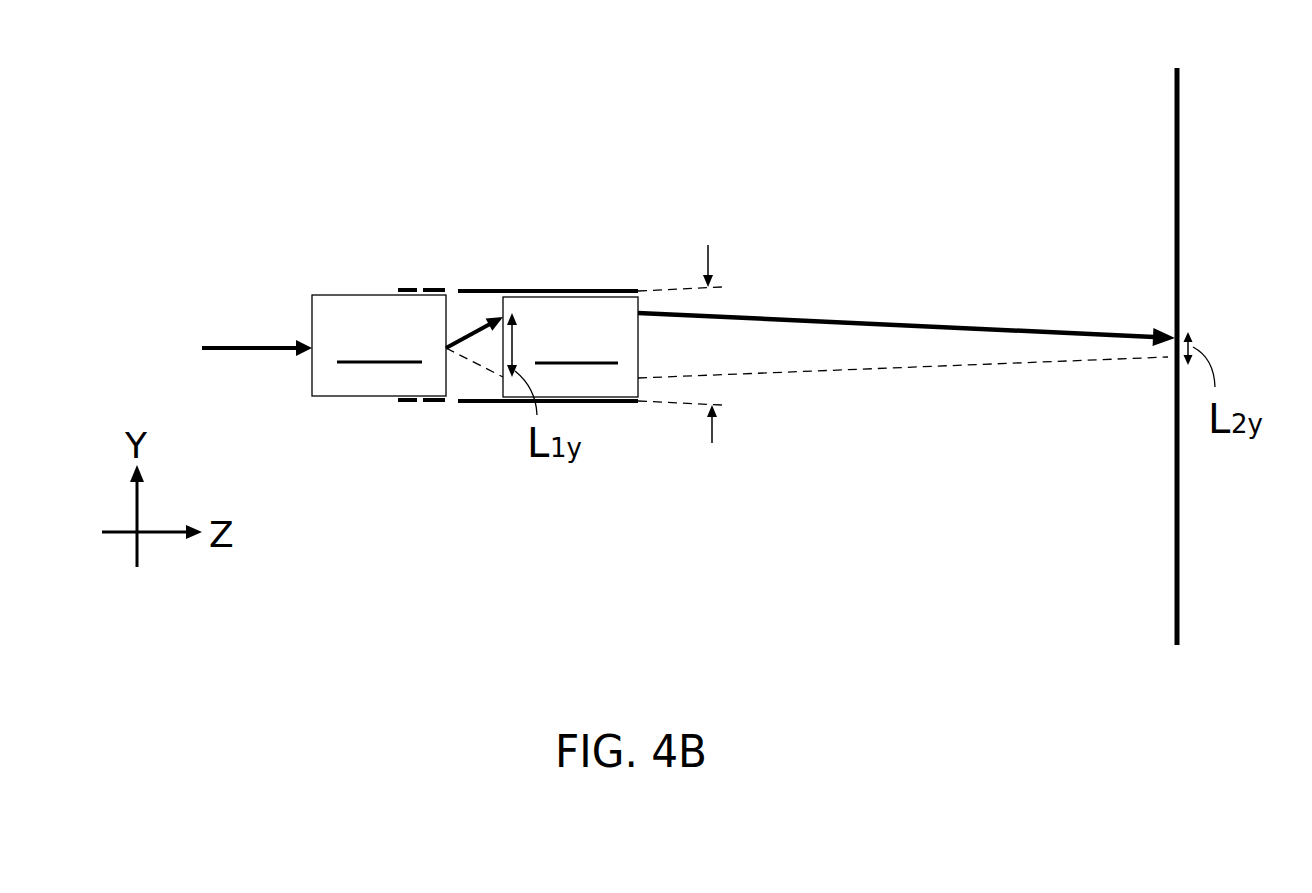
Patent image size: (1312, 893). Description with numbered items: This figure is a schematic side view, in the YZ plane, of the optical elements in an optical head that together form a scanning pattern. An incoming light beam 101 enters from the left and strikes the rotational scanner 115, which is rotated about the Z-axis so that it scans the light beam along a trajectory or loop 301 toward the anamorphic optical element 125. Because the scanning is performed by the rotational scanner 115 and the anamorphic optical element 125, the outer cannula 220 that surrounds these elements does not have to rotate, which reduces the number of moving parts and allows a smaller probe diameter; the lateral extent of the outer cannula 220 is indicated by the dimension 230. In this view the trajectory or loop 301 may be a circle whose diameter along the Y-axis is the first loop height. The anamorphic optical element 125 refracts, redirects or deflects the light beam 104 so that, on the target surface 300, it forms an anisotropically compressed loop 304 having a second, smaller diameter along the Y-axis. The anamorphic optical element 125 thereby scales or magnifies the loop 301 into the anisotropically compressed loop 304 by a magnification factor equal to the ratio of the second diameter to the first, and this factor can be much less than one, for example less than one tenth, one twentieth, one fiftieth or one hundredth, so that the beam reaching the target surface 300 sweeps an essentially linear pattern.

The input light beam 101 is at (226, 347).
The rotational scanner 115 is at (379, 345).
The anamorphic optical element 125 is at (570, 347).
The outer cannula 220 is at (463, 405).
The trajectory or loop 301 is at (510, 340).
The aperture extent 230 is at (710, 272).
The light beam 104 is at (868, 322).
The target surface 300 is at (1175, 103).
The anisotropically compressed loop 304 is at (1192, 342).